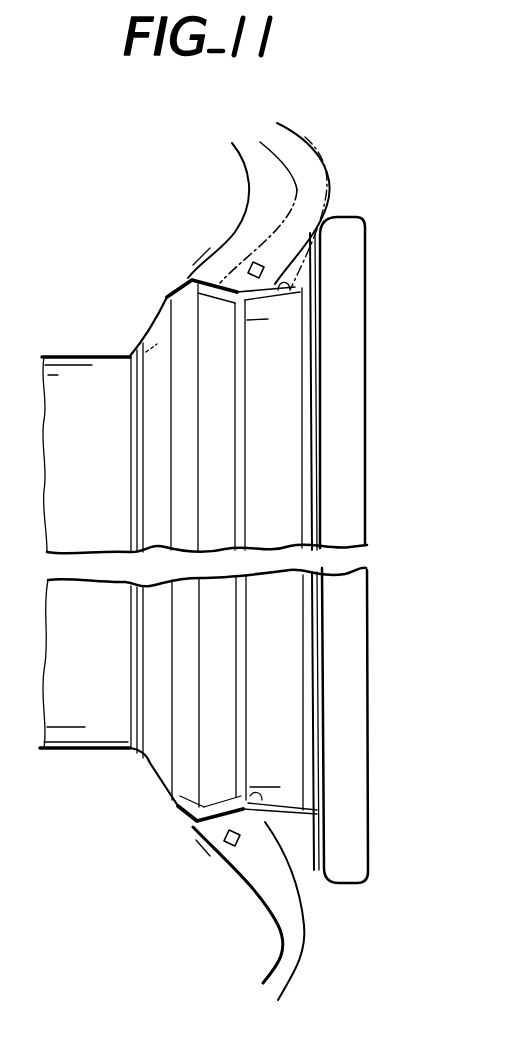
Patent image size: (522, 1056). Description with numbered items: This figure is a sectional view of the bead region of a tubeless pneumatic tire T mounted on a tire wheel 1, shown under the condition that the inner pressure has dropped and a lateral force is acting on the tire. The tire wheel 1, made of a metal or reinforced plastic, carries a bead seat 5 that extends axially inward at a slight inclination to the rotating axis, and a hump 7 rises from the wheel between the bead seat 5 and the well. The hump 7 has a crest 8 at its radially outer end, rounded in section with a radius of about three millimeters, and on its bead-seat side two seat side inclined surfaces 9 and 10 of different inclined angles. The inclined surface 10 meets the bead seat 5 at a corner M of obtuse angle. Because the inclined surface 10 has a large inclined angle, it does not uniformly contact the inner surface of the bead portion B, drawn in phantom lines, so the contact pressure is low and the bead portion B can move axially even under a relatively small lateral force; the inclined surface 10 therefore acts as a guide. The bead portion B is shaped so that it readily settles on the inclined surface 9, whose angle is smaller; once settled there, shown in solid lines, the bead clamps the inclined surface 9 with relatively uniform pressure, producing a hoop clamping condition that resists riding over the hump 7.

The tire wheel 1 is at (366, 307).
The bead seat 5 is at (277, 306).
The hump 7 is at (185, 278).
The crest 8 is at (206, 694).
The seat side inclined surface 9 is at (188, 822).
The seat side inclined surface 10 is at (265, 806).
The corner M is at (251, 715).
The bead portion B is at (203, 262).
The tubeless pneumatic tire T is at (240, 164).